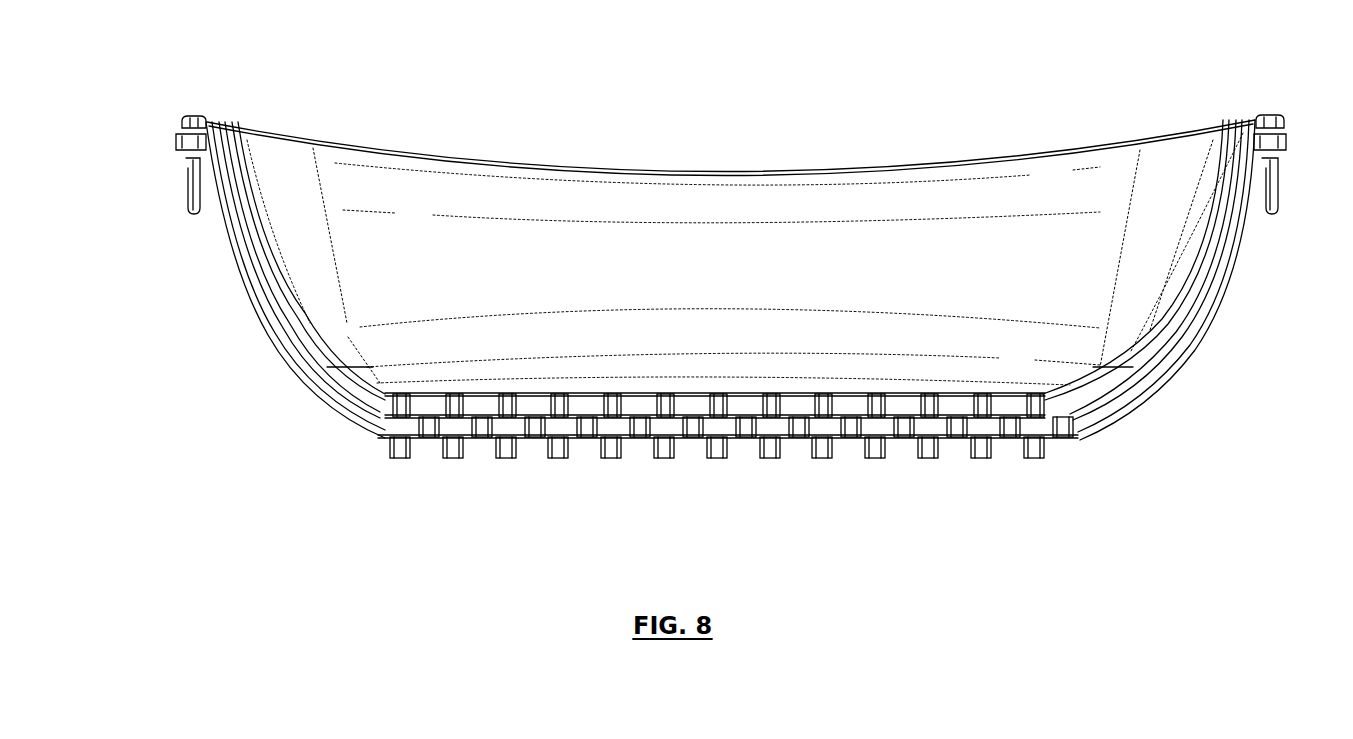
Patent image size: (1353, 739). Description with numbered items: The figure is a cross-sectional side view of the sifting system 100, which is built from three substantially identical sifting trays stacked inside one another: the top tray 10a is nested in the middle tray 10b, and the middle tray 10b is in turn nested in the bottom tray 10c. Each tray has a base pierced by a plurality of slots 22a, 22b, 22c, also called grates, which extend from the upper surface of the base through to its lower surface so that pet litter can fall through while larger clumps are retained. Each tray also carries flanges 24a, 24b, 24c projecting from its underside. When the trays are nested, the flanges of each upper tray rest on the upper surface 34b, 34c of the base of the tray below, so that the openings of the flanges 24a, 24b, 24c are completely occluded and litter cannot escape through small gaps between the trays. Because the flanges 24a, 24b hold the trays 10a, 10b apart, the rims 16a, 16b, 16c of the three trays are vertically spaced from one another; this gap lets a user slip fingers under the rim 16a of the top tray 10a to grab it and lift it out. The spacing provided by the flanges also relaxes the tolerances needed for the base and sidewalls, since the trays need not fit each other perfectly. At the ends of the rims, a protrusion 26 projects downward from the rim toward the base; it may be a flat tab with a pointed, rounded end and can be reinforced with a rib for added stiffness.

The sifting system 100 is at (710, 316).
The tray 10a is at (235, 213).
The tray 10b is at (248, 268).
The tray 10c is at (265, 328).
The rim 16a is at (180, 118).
The rim 16b is at (177, 140).
The rim 16c is at (182, 167).
The slots 22a is at (885, 403).
The slots 22b is at (848, 430).
The slots 22c is at (925, 453).
The flange 24a is at (656, 477).
The flange 24b is at (698, 470).
The flange 24c is at (686, 486).
The upper surface 34b is at (452, 417).
The upper surface 34c is at (482, 442).
The protrusion 26 is at (1283, 128).